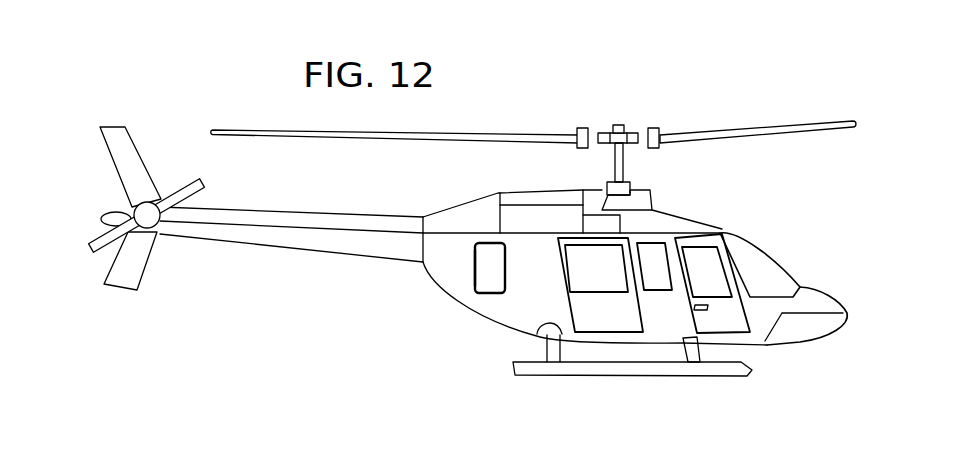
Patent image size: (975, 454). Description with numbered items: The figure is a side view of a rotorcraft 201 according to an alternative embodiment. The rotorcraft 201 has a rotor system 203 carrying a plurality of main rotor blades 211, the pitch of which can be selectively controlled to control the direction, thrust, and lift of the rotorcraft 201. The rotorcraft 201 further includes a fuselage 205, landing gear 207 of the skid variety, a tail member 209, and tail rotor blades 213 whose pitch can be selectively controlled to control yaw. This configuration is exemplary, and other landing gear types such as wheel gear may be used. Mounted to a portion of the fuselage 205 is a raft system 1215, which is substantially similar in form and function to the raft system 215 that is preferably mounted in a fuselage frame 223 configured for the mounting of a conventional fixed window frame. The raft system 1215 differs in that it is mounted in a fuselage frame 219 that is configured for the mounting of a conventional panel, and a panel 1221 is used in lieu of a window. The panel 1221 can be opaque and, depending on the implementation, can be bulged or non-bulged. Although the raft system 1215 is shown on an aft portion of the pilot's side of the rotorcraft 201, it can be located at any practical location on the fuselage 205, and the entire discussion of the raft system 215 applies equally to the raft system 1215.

The rotorcraft 201 is at (668, 76).
The rotor system 203 is at (600, 124).
The fuselage 205 is at (632, 346).
The landing gear 207 is at (537, 373).
The tail member 209 is at (277, 253).
The main rotor blades 211 is at (745, 125).
The tail rotor blades 213 is at (93, 236).
The raft system 215 is at (660, 308).
The fuselage frame 219 is at (473, 268).
The fuselage frame 223 is at (653, 242).
The raft system 1215 is at (479, 225).
The panel 1221 is at (492, 285).